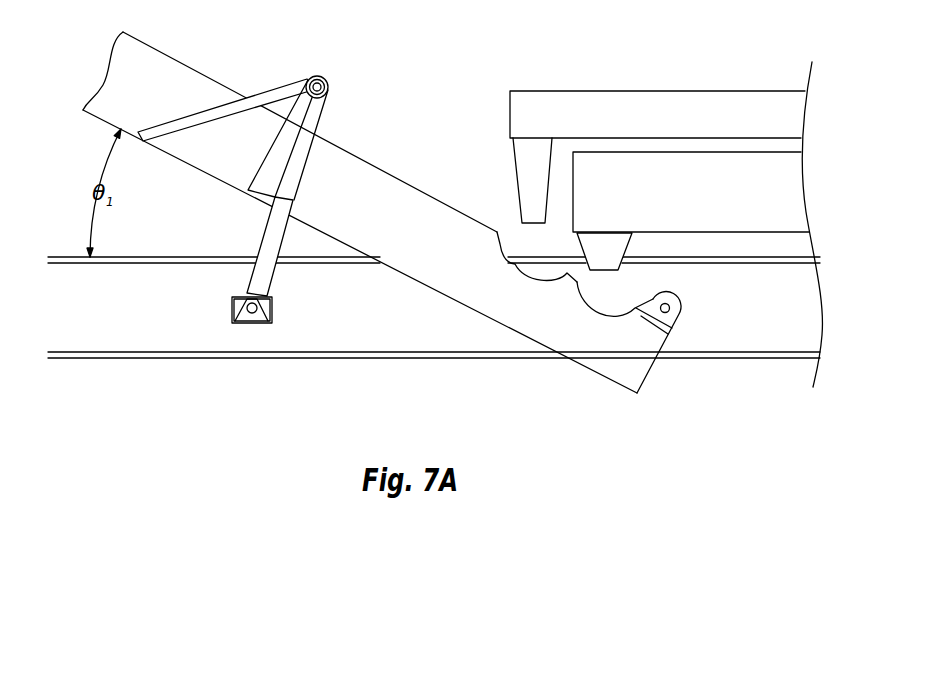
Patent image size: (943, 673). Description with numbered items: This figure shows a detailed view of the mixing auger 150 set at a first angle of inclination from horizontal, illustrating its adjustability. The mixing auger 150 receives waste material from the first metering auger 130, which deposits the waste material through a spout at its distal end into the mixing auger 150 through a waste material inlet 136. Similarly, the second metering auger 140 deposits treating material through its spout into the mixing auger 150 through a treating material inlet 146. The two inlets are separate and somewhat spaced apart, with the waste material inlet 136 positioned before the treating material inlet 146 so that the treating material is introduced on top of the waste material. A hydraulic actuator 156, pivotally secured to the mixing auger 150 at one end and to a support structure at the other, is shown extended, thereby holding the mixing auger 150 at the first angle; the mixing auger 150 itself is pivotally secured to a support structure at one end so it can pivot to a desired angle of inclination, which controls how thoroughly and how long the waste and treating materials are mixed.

The first metering auger 130 is at (711, 233).
The waste material inlet 136 is at (595, 312).
The second metering auger 140 is at (611, 91).
The treating material inlet 146 is at (513, 272).
The mixing auger 150 is at (407, 277).
The hydraulic actuator 156 is at (247, 278).